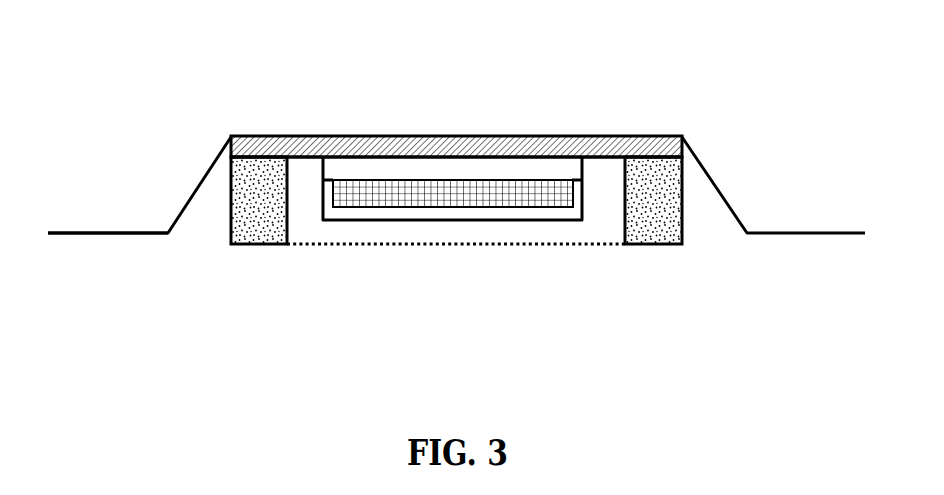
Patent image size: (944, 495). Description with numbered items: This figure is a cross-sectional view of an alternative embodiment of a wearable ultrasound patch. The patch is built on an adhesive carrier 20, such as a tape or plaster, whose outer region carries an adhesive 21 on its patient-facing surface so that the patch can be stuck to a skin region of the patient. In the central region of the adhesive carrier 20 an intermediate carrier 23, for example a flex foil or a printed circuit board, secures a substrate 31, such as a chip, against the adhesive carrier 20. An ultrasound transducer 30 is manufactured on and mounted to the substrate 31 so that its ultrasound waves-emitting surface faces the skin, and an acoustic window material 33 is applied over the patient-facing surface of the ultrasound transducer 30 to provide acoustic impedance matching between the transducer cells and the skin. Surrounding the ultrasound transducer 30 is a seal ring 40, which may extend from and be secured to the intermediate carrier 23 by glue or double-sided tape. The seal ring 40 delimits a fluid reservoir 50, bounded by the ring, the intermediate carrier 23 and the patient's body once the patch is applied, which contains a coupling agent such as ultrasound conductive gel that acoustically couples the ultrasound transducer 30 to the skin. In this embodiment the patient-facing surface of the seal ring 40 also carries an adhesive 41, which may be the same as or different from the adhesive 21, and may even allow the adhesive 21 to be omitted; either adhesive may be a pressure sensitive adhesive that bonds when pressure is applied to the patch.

The adhesive carrier 20 is at (123, 233).
The adhesive 21 is at (93, 233).
The intermediate carrier 23 is at (505, 147).
The substrate 31 is at (393, 167).
The acoustic window material 33 is at (382, 217).
The ultrasound transducer 30 is at (463, 197).
The seal ring 40 is at (258, 228).
The adhesive 41 is at (655, 243).
The fluid reservoir 50 is at (608, 220).